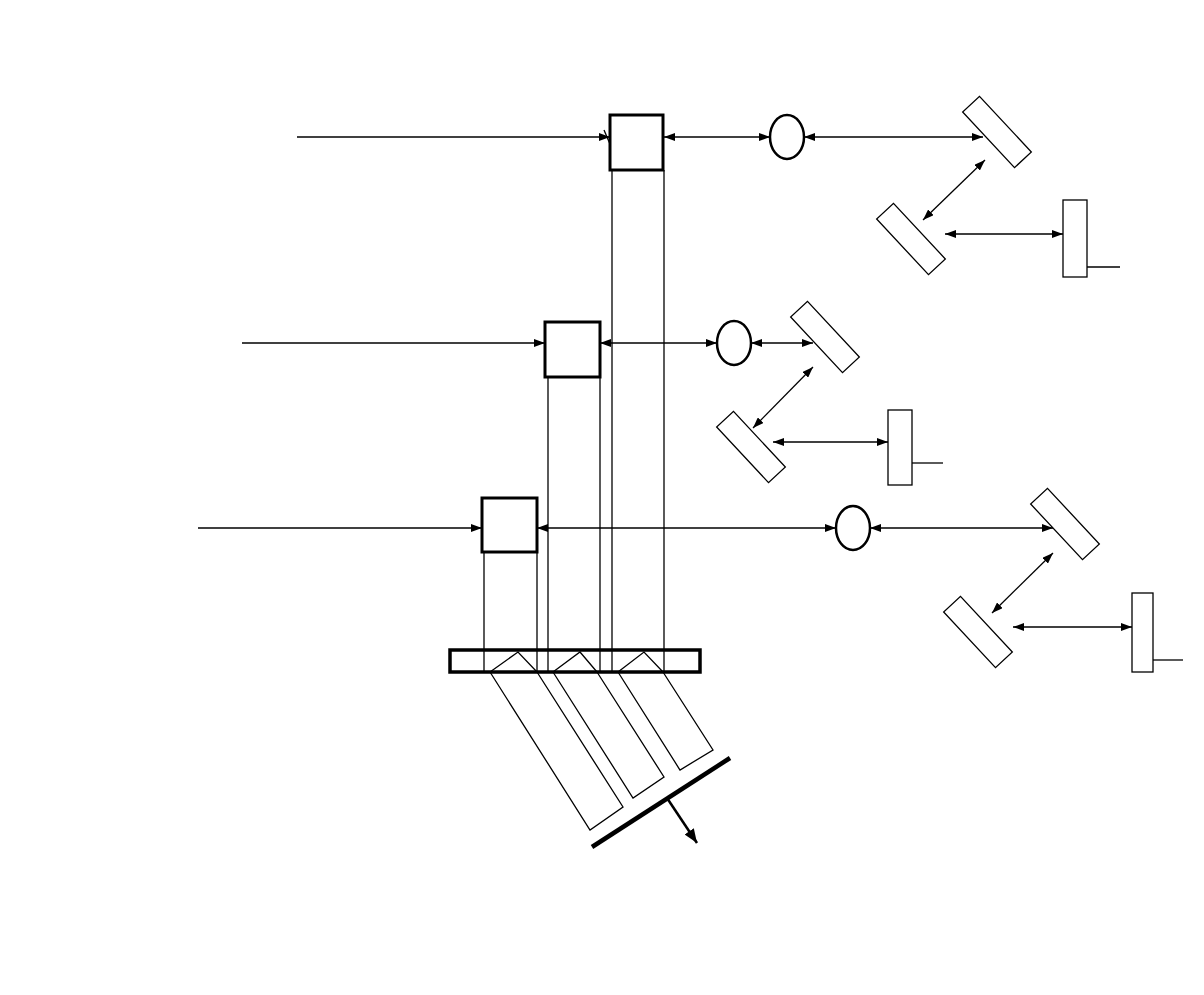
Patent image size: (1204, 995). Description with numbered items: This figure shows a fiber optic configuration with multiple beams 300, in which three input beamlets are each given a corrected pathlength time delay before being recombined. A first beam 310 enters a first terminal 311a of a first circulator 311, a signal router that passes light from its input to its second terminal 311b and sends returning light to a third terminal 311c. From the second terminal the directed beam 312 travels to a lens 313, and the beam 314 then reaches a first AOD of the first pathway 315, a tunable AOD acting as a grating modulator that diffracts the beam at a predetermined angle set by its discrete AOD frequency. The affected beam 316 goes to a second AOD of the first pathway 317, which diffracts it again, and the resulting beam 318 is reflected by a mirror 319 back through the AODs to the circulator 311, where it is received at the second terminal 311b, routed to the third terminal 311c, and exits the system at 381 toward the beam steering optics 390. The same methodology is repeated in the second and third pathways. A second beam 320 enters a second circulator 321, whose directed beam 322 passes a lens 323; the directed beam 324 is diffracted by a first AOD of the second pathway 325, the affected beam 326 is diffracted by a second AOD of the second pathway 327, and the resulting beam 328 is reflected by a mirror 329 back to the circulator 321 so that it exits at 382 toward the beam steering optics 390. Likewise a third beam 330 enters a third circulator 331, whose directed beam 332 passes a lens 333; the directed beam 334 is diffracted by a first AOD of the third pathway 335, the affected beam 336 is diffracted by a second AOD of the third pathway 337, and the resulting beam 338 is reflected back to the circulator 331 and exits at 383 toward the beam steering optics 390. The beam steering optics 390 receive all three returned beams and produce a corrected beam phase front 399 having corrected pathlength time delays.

The fiber optic configuration with multiple beams 300 is at (1188, 50).
The first beam 310 is at (327, 139).
The first circulator 311 is at (630, 113).
The first terminal 311a is at (610, 120).
The second terminal 311b is at (665, 148).
The third terminal 311c is at (638, 170).
The directed beam 312 is at (716, 137).
The lens 313 is at (768, 125).
The beam 314 is at (868, 137).
The first AOD of the first pathway 315 is at (1007, 125).
The affected beam 316 is at (957, 192).
The second AOD of the first pathway 317 is at (890, 223).
The resulting beam 318 is at (1020, 237).
The mirror 319 is at (1121, 238).
The second beam 320 is at (272, 345).
The second circulator 321 is at (547, 318).
The directed beam 322 is at (697, 343).
The lens 323 is at (730, 325).
The directed beam 324 is at (782, 342).
The first AOD of the second pathway 325 is at (827, 322).
The affected beam 326 is at (785, 399).
The second AOD of the second pathway 327 is at (740, 455).
The resulting beam 328 is at (845, 443).
The phase actuator 329 is at (946, 447).
The third beam 330 is at (395, 530).
The third circulator 331 is at (498, 497).
The directed beam 332 is at (708, 528).
The lens 333 is at (857, 552).
The directed beam 334 is at (945, 528).
The first AOD of the third pathway 335 is at (1078, 518).
The beam path 336 is at (1025, 583).
The second AOD of the third pathway 337 is at (957, 627).
The resulting beam 338 is at (1087, 628).
The system exit 381 is at (622, 223).
The system exit 382 is at (555, 428).
The system exit 383 is at (515, 627).
The beam steering optics 390 is at (460, 673).
The corrected beam phase front 399 is at (688, 847).